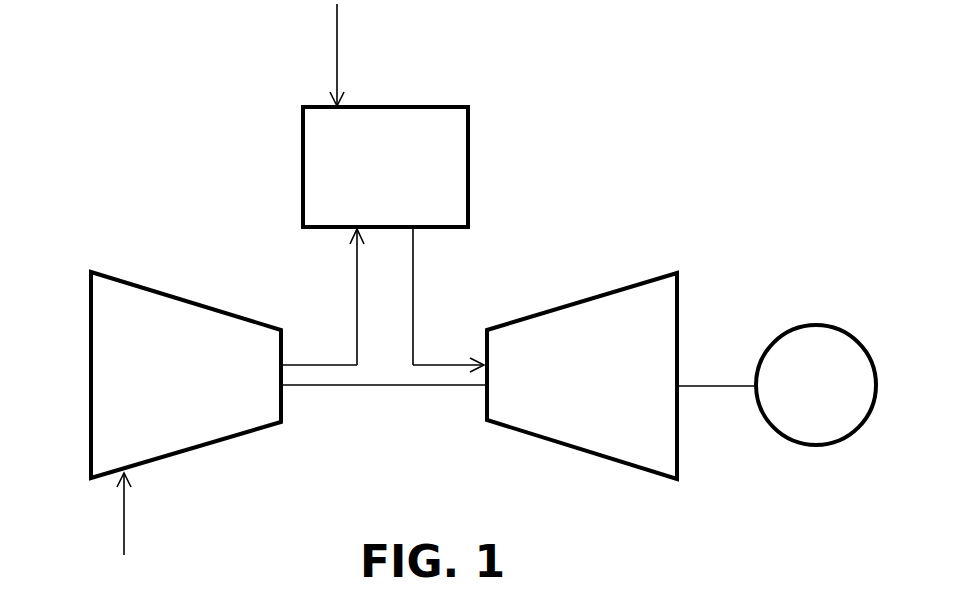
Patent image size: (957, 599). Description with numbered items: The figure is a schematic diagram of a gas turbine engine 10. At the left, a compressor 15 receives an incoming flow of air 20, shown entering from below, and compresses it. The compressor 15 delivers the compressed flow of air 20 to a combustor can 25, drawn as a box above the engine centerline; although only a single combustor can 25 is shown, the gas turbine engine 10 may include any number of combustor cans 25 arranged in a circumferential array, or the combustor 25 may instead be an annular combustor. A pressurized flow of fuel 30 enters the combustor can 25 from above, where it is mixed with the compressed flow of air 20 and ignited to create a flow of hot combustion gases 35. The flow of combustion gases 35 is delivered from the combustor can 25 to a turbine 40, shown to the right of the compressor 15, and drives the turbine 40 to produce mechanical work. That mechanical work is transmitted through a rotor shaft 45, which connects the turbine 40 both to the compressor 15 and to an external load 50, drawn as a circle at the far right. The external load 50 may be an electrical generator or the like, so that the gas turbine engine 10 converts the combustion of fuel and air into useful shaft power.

The gas turbine engine 10 is at (115, 90).
The compressor 15 is at (190, 388).
The flow of air 20 is at (123, 512).
The combustor can 25 is at (400, 174).
The flow of fuel 30 is at (336, 34).
The flow of combustion gases 35 is at (428, 362).
The turbine 40 is at (568, 390).
The rotor shaft 45 is at (697, 385).
The external load 50 is at (798, 389).